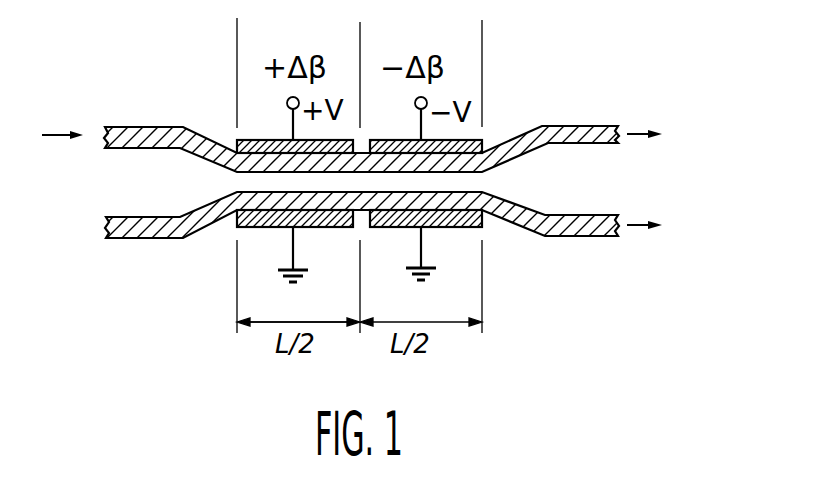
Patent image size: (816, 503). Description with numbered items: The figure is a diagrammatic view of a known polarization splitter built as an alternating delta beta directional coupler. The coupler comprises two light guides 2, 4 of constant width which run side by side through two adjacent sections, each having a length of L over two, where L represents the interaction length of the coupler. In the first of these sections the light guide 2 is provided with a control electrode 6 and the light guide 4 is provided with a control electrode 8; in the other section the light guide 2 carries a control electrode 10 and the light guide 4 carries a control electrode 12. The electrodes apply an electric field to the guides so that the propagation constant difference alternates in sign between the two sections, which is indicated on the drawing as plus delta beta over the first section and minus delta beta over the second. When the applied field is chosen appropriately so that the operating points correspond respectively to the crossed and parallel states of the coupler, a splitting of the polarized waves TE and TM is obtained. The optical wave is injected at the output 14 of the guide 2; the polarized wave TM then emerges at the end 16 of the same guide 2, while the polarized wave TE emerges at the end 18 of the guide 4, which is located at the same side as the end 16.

The light guide 2 is at (565, 116).
The light guide 4 is at (578, 239).
The control electrode 6 is at (231, 143).
The control electrode 8 is at (236, 228).
The control electrode 10 is at (490, 142).
The control electrode 12 is at (487, 221).
The output 14 is at (118, 128).
The end 16 is at (601, 127).
The end 18 is at (604, 238).